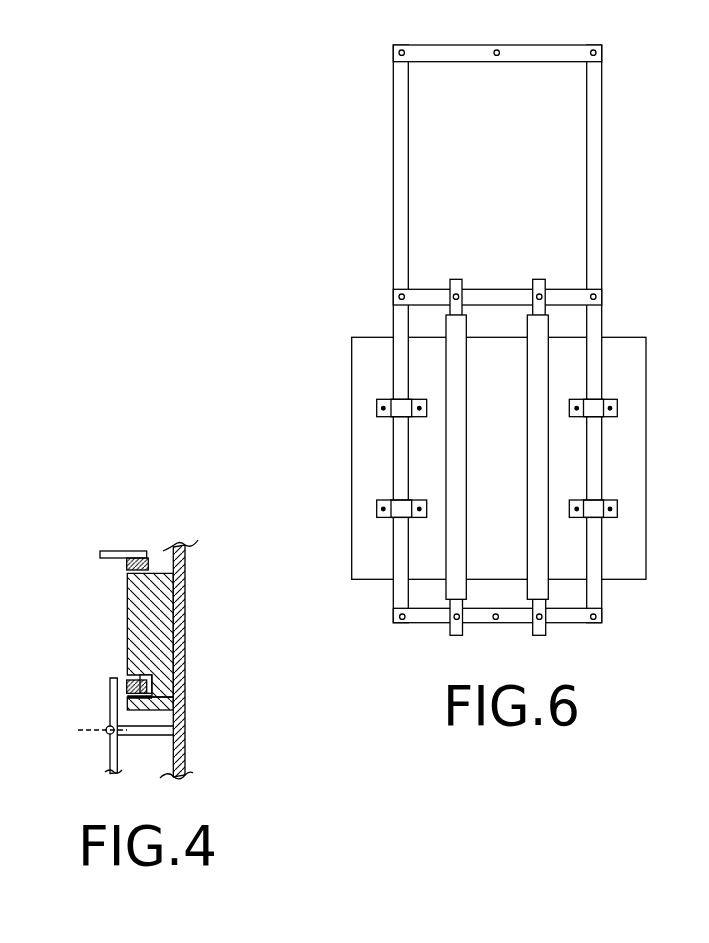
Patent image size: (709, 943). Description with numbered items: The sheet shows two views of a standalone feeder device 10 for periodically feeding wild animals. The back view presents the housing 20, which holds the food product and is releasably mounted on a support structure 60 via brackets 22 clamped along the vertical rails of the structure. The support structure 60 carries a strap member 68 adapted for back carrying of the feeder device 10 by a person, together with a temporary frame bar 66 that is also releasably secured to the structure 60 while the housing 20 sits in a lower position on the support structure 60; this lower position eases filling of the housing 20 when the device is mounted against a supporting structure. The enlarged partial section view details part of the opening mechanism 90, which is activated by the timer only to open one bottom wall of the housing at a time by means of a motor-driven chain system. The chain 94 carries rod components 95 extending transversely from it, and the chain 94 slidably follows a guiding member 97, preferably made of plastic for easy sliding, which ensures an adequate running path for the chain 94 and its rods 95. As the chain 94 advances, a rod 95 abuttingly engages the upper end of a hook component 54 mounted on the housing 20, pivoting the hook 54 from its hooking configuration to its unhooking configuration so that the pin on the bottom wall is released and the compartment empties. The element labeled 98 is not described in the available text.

In FIG. 6, the feeder device 10 is at (282, 186).
In FIG. 6, the housing 20 is at (365, 353).
In FIG. 6, the brackets 22 is at (611, 417).
In FIG. 6, the support structure 60 is at (402, 123).
In FIG. 6, the temporary frame bar 66 is at (485, 288).
In FIG. 6, the strap member 68 is at (527, 468).
In FIG. 4, the opening mechanism 90 is at (104, 489).
In FIG. 4, the chain 94 is at (127, 563).
In FIG. 4, the rod components 95 is at (110, 552).
In FIG. 4, the guiding member 97 is at (157, 573).
In FIG. 4, the wall lip 98 is at (150, 700).
In FIG. 4, the hook component 54 is at (112, 702).